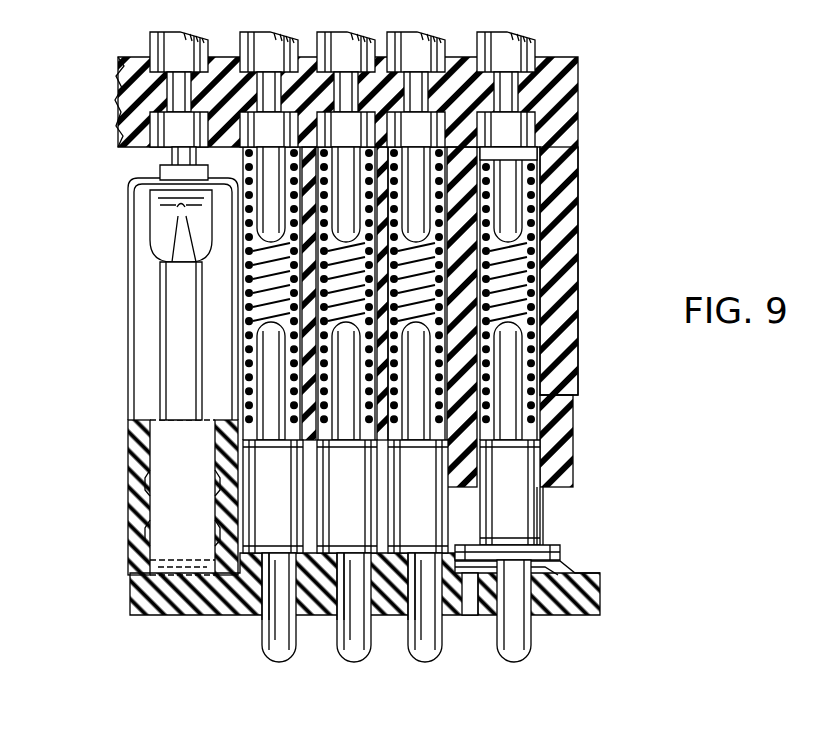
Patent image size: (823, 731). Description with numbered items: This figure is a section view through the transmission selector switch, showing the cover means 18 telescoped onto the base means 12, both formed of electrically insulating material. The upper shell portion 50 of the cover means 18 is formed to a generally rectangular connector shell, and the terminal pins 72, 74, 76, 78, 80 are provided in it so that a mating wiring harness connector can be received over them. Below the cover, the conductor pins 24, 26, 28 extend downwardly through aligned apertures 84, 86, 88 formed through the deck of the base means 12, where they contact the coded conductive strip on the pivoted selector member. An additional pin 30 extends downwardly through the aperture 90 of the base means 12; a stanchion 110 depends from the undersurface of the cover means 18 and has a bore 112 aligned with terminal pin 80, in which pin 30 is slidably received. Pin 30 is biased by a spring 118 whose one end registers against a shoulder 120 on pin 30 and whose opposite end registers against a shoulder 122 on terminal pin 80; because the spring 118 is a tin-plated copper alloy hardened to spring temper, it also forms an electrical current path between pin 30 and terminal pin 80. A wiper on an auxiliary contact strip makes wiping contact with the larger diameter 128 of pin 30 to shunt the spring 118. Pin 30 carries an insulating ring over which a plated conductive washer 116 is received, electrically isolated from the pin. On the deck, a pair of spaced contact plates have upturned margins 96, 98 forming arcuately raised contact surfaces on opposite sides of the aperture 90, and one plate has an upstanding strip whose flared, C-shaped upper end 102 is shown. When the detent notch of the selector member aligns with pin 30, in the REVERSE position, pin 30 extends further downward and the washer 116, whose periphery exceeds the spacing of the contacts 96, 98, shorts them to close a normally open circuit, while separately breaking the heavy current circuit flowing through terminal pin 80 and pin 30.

The base means 12 is at (186, 617).
The cover means 18 is at (118, 118).
The conductor pin 24 is at (280, 665).
The conductor pin 26 is at (355, 665).
The conductor pin 28 is at (425, 665).
The pin 30 is at (531, 645).
The upper shell portion 50 is at (118, 70).
The terminal pin 72 is at (152, 37).
The terminal pin 74 is at (248, 36).
The terminal pin 76 is at (330, 36).
The terminal pin 78 is at (405, 35).
The terminal pin 80 is at (492, 40).
The aperture 84 is at (262, 620).
The aperture 86 is at (338, 618).
The aperture 88 is at (410, 620).
The aperture 90 is at (474, 627).
The margin 96 is at (545, 568).
The margin 98 is at (470, 615).
The C-shaped upper end 102 is at (152, 310).
The stanchion 110 is at (580, 268).
The bore 112 is at (548, 462).
The conductive washer 116 is at (565, 545).
The spring 118 is at (580, 240).
The shoulder 120 is at (548, 408).
The shoulder 122 is at (545, 172).
The larger diameter 128 is at (540, 505).